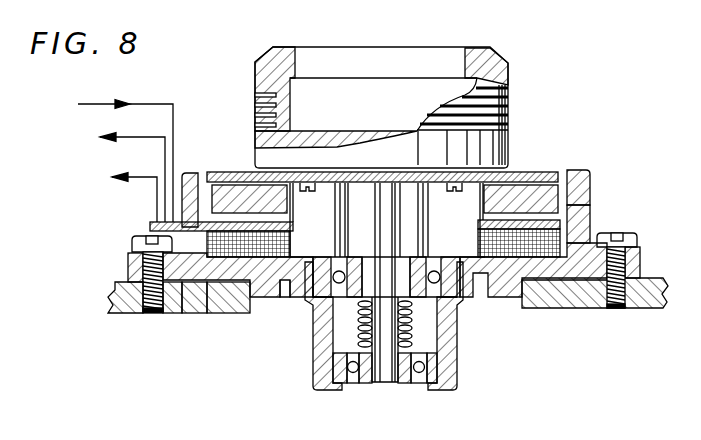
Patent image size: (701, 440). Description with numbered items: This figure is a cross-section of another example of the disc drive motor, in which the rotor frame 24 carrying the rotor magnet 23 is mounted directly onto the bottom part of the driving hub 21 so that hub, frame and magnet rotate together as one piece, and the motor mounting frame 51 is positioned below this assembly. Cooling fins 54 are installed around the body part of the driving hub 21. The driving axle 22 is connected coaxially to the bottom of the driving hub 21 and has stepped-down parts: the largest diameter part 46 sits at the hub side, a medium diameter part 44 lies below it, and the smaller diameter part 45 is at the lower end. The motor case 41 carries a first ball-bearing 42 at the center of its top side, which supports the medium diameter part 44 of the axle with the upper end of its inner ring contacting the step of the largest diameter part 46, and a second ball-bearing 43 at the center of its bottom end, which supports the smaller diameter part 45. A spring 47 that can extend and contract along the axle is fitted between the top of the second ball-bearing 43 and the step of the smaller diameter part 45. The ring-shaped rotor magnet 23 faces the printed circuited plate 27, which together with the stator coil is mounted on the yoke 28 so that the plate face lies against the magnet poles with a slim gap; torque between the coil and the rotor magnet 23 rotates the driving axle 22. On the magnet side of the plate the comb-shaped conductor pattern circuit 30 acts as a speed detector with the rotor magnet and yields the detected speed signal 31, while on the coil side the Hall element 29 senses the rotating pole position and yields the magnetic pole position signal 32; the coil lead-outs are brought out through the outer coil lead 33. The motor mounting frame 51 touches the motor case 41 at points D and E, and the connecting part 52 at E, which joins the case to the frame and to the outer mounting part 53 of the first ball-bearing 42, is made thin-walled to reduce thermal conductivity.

The driving hub 21 is at (480, 64).
The driving axle 22 is at (400, 381).
The rotor magnet 23 is at (551, 171).
The rotor frame 24 is at (524, 171).
The printed circuited plate 27 is at (590, 192).
The yoke 28 is at (551, 255).
The Hall element 29 is at (522, 250).
The conductor pattern circuit 30 is at (199, 197).
The detected speed signal 31 is at (134, 180).
The magnetic pole position signal 32 is at (120, 143).
The outer coil lead 33 is at (106, 104).
The motor case 41 is at (215, 305).
The first ball-bearing 42 is at (320, 259).
The second ball-bearing 43 is at (342, 384).
The sleeve 44 is at (408, 260).
The smaller diameter part 45 is at (381, 382).
The largest diameter part 46 is at (418, 210).
The spring 47 is at (410, 333).
The motor mounting frame 51 is at (587, 297).
The connecting part 52 is at (293, 273).
The outer mounting part 53 is at (312, 310).
The cooling fins 54 is at (510, 104).
The contact point D is at (180, 302).
The contact point E is at (243, 300).